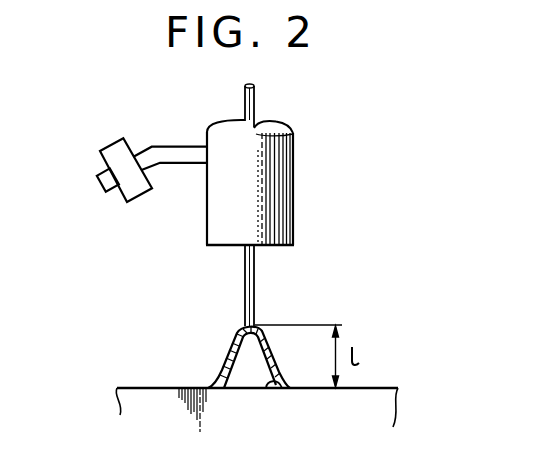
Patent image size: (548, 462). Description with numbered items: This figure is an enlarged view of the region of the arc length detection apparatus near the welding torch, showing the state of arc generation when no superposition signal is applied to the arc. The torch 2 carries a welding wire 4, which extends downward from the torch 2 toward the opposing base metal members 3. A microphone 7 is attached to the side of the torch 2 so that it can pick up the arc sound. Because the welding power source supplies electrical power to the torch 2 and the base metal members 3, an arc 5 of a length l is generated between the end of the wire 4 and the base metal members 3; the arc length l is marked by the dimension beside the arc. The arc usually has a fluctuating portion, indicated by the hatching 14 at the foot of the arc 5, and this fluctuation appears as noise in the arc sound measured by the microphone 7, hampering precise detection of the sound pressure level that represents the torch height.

The torch 2 is at (289, 194).
The base metal members 3 is at (160, 387).
The welding wire 4 is at (245, 279).
The arc 5 is at (247, 352).
The microphone 7 is at (115, 143).
The hatching 14 is at (271, 389).